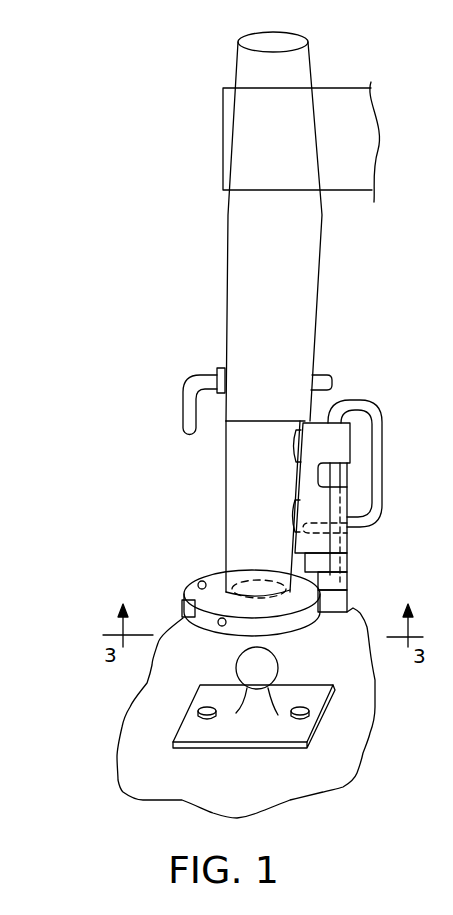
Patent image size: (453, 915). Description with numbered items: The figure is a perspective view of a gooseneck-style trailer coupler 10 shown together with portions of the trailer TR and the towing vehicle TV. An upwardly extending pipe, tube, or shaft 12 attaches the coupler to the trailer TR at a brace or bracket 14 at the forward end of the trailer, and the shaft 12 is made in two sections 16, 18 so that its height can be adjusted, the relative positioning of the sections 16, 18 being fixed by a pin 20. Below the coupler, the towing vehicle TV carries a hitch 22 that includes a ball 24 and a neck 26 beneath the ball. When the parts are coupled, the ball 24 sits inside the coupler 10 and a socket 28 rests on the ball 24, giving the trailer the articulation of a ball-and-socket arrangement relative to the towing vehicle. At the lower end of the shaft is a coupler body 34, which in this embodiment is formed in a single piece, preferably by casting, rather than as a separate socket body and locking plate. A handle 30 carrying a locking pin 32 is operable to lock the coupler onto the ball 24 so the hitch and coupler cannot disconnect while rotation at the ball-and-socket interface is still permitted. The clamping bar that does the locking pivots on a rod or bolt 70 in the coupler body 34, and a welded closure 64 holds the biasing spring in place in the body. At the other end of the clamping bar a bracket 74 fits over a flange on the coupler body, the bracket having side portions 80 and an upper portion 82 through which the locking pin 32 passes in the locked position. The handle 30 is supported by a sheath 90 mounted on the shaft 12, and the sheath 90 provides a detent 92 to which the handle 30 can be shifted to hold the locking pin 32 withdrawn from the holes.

The trailer coupler 10 is at (137, 184).
The shaft 12 is at (226, 421).
The bracket 14 is at (222, 143).
The section 16 is at (226, 489).
The section 18 is at (226, 282).
The pin 20 is at (196, 380).
The hitch 22 is at (239, 728).
The ball 24 is at (236, 668).
The neck 26 is at (270, 700).
The socket 28 is at (248, 580).
The handle 30 is at (383, 412).
The locking pin 32 is at (349, 560).
The coupler body 34 is at (182, 602).
The welded closure 64 is at (220, 627).
The bolt 70 is at (199, 582).
The bracket 74 is at (349, 603).
The side portions 80 is at (335, 603).
The upper portion 82 is at (349, 578).
The sheath 90 is at (315, 437).
The detent 92 is at (338, 477).
The trailer TR is at (340, 96).
The towing vehicle TV is at (133, 743).